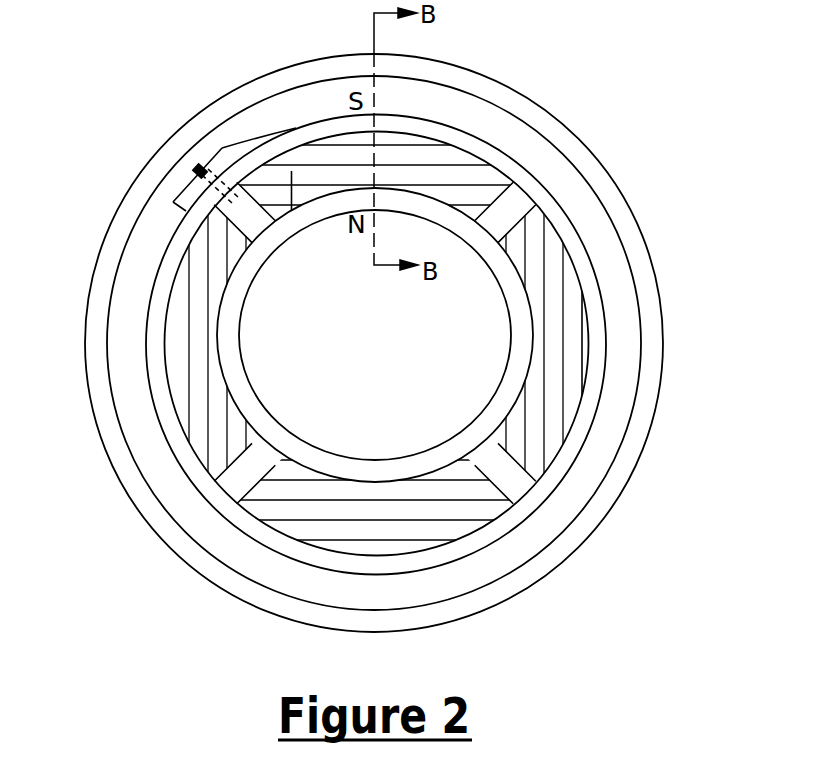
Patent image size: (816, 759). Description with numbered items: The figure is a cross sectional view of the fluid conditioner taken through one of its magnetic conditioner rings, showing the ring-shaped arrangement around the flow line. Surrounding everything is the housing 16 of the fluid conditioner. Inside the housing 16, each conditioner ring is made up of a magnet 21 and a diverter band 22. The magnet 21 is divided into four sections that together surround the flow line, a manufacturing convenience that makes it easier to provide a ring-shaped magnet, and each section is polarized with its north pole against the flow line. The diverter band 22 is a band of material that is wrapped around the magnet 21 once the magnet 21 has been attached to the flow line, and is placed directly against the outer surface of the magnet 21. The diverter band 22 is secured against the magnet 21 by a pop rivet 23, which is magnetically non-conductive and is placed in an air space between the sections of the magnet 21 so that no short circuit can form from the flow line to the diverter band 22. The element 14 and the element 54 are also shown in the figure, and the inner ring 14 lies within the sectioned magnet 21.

The magnet ring 14 is at (237, 293).
The housing 16 is at (284, 79).
The magnet 21 is at (201, 350).
The diverter band 22 is at (154, 341).
The pop rivet 23 is at (199, 157).
The pole piece 54 is at (382, 516).